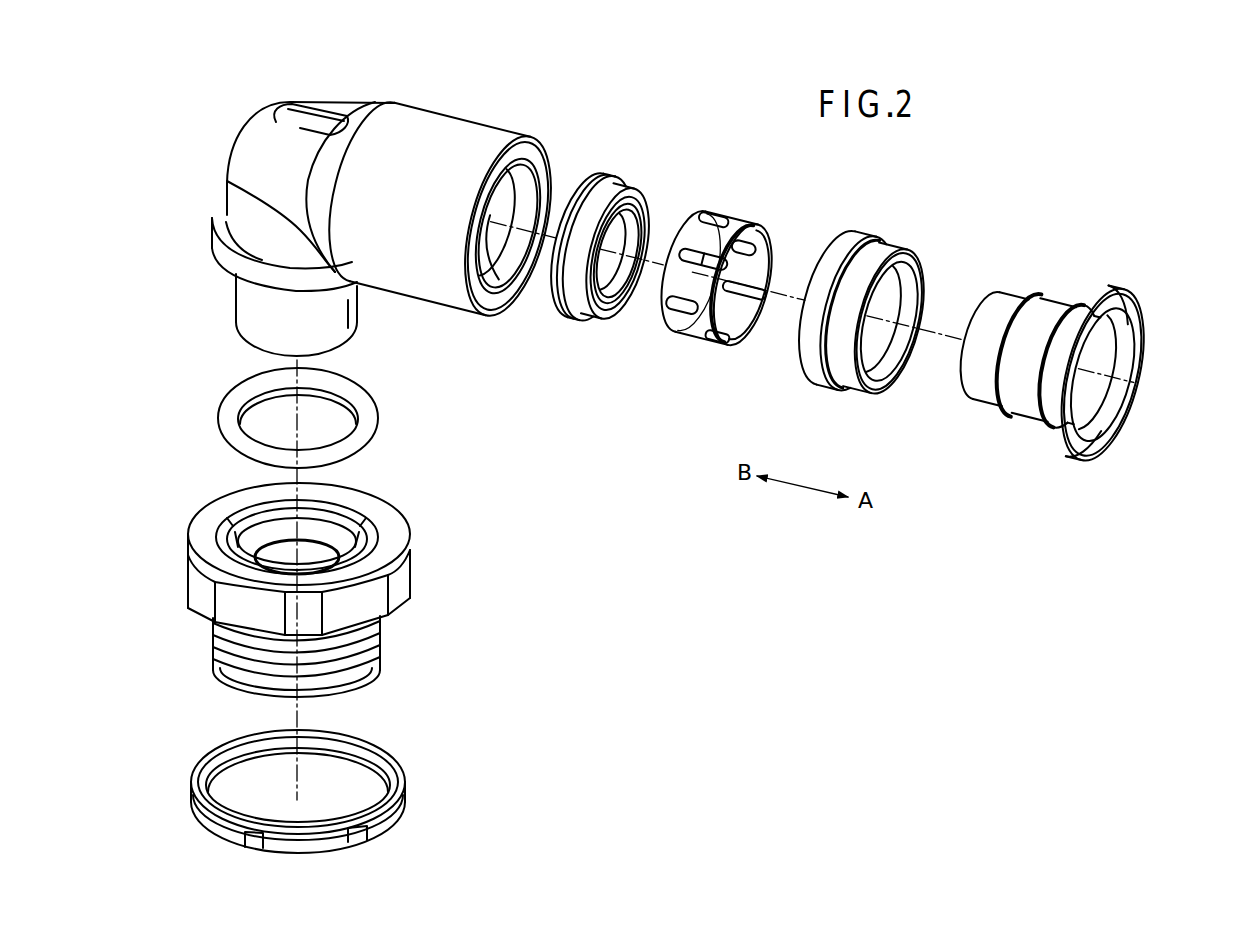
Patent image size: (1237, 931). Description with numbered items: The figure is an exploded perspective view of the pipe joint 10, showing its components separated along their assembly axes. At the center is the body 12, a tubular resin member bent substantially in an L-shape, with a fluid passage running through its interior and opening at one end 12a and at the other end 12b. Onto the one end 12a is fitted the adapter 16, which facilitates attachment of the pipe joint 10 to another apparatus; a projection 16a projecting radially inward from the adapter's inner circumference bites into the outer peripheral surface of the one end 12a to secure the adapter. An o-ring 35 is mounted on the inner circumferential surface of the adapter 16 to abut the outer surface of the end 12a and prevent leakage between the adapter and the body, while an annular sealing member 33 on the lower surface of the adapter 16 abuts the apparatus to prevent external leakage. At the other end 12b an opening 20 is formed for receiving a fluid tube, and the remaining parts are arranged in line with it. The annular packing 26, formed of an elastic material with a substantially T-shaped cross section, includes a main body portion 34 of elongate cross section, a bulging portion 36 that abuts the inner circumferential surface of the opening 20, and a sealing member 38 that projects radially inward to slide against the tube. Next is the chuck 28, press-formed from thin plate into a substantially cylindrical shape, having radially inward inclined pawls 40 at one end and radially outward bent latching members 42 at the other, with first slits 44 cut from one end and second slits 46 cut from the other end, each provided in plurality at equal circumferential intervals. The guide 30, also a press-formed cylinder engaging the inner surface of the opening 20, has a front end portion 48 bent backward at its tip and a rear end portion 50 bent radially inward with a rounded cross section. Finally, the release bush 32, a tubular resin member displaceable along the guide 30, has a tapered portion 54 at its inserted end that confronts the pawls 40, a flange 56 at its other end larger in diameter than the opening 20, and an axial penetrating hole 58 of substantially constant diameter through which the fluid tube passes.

The pipe joint 10 is at (741, 127).
The body 12 is at (380, 218).
The one end 12a is at (250, 317).
The other end 12b is at (486, 140).
The adapter 16 is at (331, 579).
The projection 16a is at (323, 550).
The opening 20 is at (520, 187).
The packing 26 is at (605, 251).
The chuck 28 is at (719, 285).
The guide 30 is at (874, 340).
The release bush 32 is at (1063, 369).
The sealing member 33 is at (393, 767).
The main body portion 34 is at (563, 298).
The o-ring 35 is at (227, 412).
The bulging portion 36 is at (573, 317).
The sealing member 38 is at (625, 235).
The pawls 40 is at (658, 275).
The latching members 42 is at (767, 257).
The first slits 44 is at (708, 212).
The second slits 46 is at (750, 300).
The front end portion 48 is at (813, 373).
The rear end portion 50 is at (918, 302).
The tapered portion 54 is at (1000, 402).
The flange 56 is at (1092, 457).
The penetrating hole 58 is at (1100, 373).